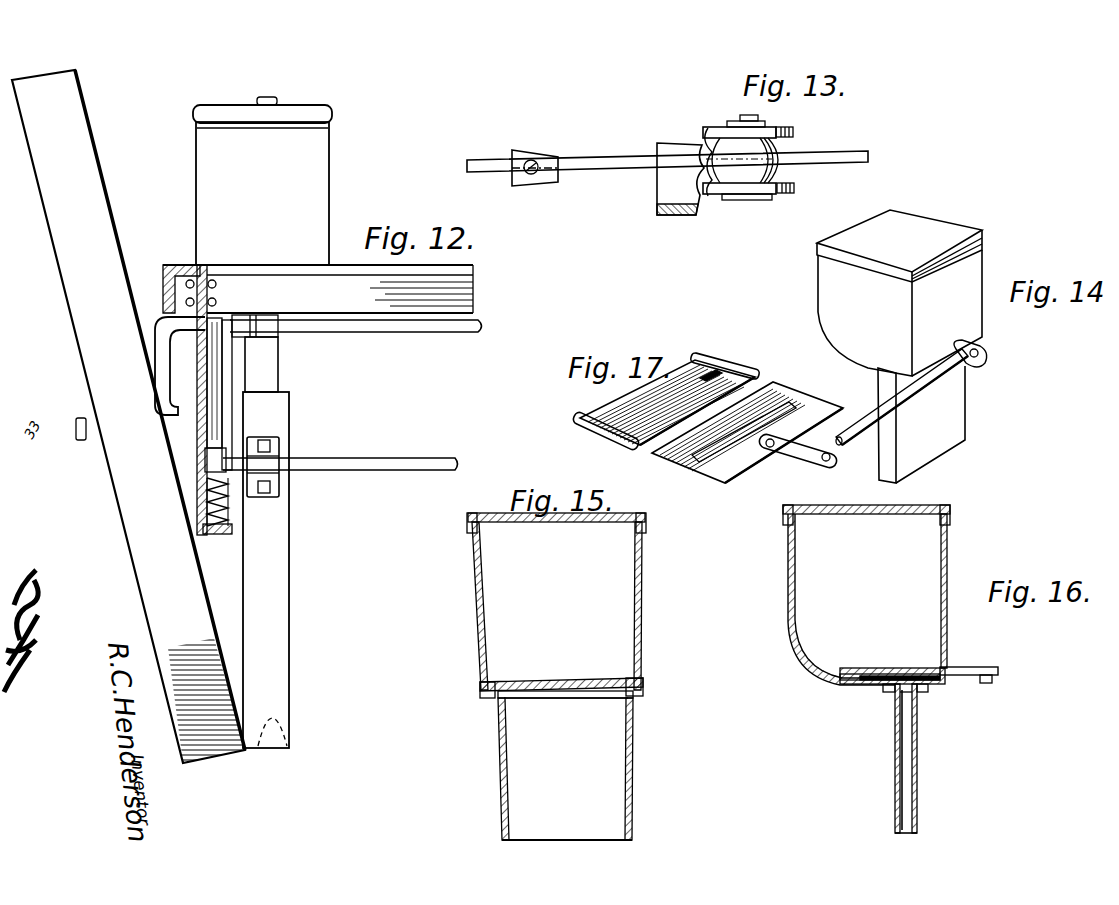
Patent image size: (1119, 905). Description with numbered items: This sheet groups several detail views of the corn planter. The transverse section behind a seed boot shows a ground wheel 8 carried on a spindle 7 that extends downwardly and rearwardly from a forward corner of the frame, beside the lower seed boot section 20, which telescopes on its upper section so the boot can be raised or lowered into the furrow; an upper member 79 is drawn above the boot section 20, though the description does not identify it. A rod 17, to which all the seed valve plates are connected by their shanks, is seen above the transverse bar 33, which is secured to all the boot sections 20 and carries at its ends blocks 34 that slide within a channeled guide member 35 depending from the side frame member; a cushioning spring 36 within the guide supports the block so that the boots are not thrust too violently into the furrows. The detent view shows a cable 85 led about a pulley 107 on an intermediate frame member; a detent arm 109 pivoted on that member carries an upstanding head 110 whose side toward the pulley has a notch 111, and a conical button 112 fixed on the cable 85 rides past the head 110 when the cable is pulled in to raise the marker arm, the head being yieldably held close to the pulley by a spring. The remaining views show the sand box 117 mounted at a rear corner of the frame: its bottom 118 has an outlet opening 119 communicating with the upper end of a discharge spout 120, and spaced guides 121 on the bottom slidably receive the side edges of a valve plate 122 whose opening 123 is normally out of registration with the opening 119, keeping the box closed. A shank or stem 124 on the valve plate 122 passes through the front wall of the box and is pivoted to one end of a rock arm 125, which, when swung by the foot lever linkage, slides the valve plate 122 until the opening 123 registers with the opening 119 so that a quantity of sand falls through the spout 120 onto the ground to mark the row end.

In FIG. 12, the spindle 7 is at (395, 278).
In FIG. 12, the ground wheel 8 is at (90, 372).
In FIG. 12, the rod 17 is at (389, 333).
In FIG. 12, the seed boot section 20 is at (286, 564).
In FIG. 12, the bar 33' 33 is at (397, 468).
In FIG. 12, the block 34 is at (224, 448).
In FIG. 12, the channeled guide member 35 is at (180, 376).
In FIG. 12, the cushioning spring 36 is at (232, 505).
In FIG. 12, the upper slide member 79 is at (280, 367).
In FIG. 13, the cable 85 is at (614, 166).
In FIG. 13, the pulley 107 is at (792, 141).
In FIG. 13, the detent arm 109 is at (686, 212).
In FIG. 13, the head 110 is at (676, 150).
In FIG. 13, the notch 111 is at (705, 140).
In FIG. 13, the conical button 112 is at (545, 158).
In FIG. 14, the sand box 117 is at (984, 272).
In FIG. 15, the sand box 117 is at (626, 586).
In FIG. 16, the sand box 117 is at (925, 572).
In FIG. 17, the bottom 118 is at (756, 376).
In FIG. 16, the bottom 118 is at (870, 691).
In FIG. 17, the outlet opening 119 is at (712, 380).
In FIG. 15, the outlet opening 119 is at (599, 692).
In FIG. 16, the outlet opening 119 is at (916, 692).
In FIG. 14, the discharge spout 120 is at (968, 422).
In FIG. 15, the discharge spout 120 is at (631, 774).
In FIG. 16, the discharge spout 120 is at (935, 758).
In FIG. 15, the guide 121 is at (591, 674).
In FIG. 16, the guide 121 is at (851, 667).
In FIG. 17, the valve plate 122 is at (807, 398).
In FIG. 15, the valve plate 122 is at (574, 684).
In FIG. 16, the valve plate 122 is at (868, 668).
In FIG. 17, the opening 123 is at (733, 442).
In FIG. 16, the opening 123 is at (893, 669).
In FIG. 14, the shank or stem 124 is at (990, 350).
In FIG. 17, the shank or stem 124 is at (808, 458).
In FIG. 16, the shank or stem 124 is at (976, 668).
In FIG. 14, the rock arm 125 is at (902, 397).